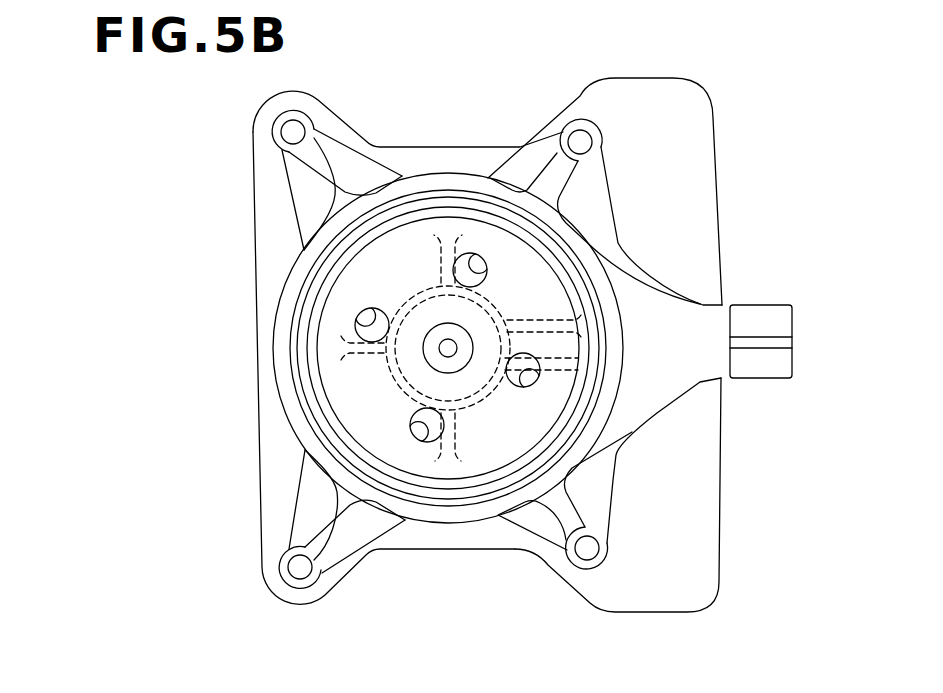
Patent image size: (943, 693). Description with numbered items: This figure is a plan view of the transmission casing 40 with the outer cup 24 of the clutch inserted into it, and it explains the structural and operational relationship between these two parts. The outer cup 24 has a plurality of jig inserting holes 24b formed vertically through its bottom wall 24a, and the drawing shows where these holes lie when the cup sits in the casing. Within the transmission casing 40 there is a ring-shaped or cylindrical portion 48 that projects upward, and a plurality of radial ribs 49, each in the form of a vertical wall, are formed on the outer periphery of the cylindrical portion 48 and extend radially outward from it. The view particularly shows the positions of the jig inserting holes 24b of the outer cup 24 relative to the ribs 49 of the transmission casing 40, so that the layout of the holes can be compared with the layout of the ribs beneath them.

The outer cup 24 is at (572, 454).
The bottom wall 24a is at (530, 261).
The jig inserting holes 24b is at (465, 252).
The transmission casing 40 is at (731, 93).
The cylindrical portion 48 is at (495, 297).
The ribs 49 is at (440, 263).